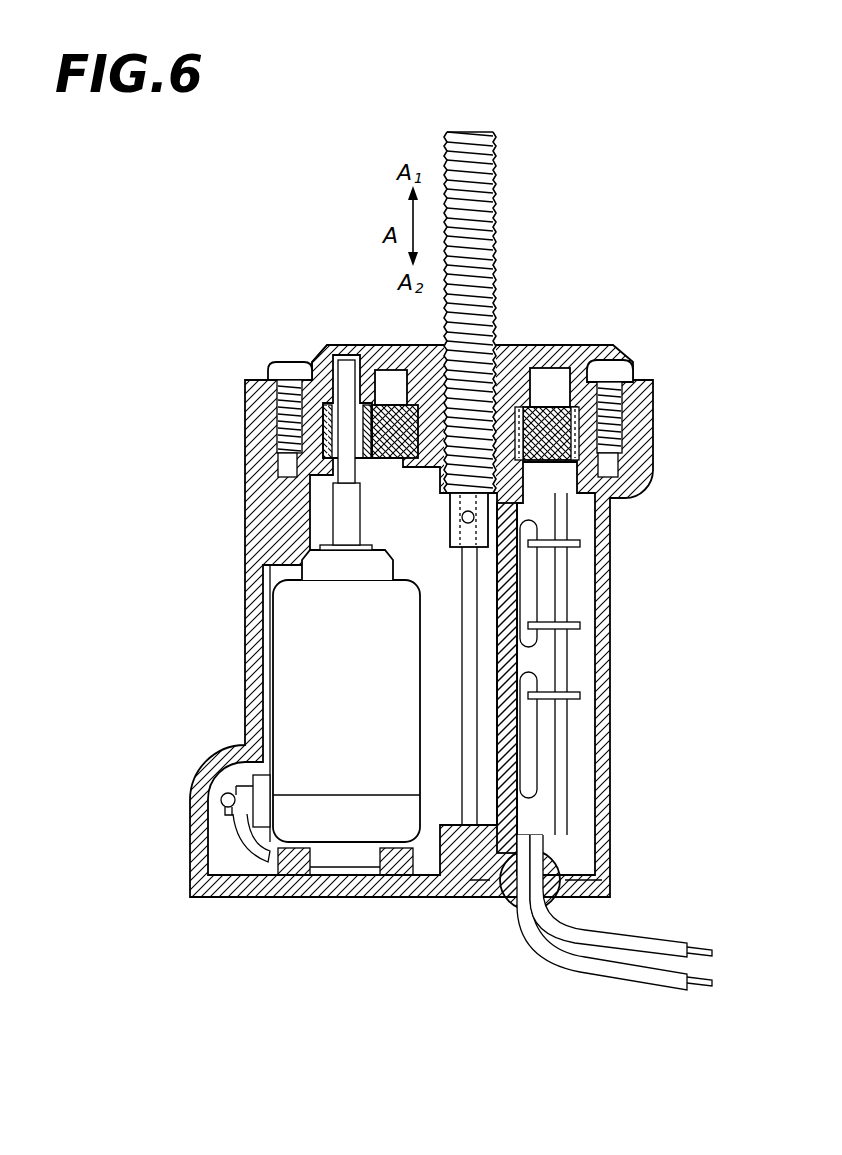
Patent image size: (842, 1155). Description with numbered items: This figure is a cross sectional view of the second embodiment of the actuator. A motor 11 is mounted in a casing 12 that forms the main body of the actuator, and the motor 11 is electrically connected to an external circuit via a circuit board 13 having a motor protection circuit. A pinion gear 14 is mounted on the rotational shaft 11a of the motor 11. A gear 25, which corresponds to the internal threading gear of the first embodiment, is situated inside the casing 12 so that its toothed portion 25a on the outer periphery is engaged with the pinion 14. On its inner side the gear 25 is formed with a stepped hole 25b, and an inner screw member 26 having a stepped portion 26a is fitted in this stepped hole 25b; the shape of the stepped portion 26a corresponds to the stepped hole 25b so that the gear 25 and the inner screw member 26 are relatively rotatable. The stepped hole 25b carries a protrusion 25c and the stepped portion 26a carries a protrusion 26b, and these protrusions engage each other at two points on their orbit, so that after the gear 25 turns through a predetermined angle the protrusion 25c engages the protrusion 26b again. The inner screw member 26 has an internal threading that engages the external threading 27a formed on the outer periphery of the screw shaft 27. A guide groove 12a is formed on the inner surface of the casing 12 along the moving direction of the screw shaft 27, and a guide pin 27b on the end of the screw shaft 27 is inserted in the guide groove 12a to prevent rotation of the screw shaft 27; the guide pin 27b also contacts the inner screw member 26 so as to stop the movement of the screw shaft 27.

The motor 11 is at (295, 672).
The rotational shaft 11a is at (337, 515).
The casing 12 is at (620, 684).
The guide groove 12a is at (473, 670).
The circuit board 13 is at (563, 823).
The pinion gear 14 is at (322, 434).
The gear 25 is at (388, 392).
The toothed portion 25a is at (322, 352).
The stepped hole 25b is at (350, 440).
The protrusion 25c is at (418, 378).
The inner screw member 26 is at (572, 372).
The stepped portion 26a is at (535, 437).
The protrusion 26b is at (520, 378).
The screw shaft 27 is at (524, 312).
The external threading 27a is at (493, 235).
The guide pin 27b is at (453, 512).